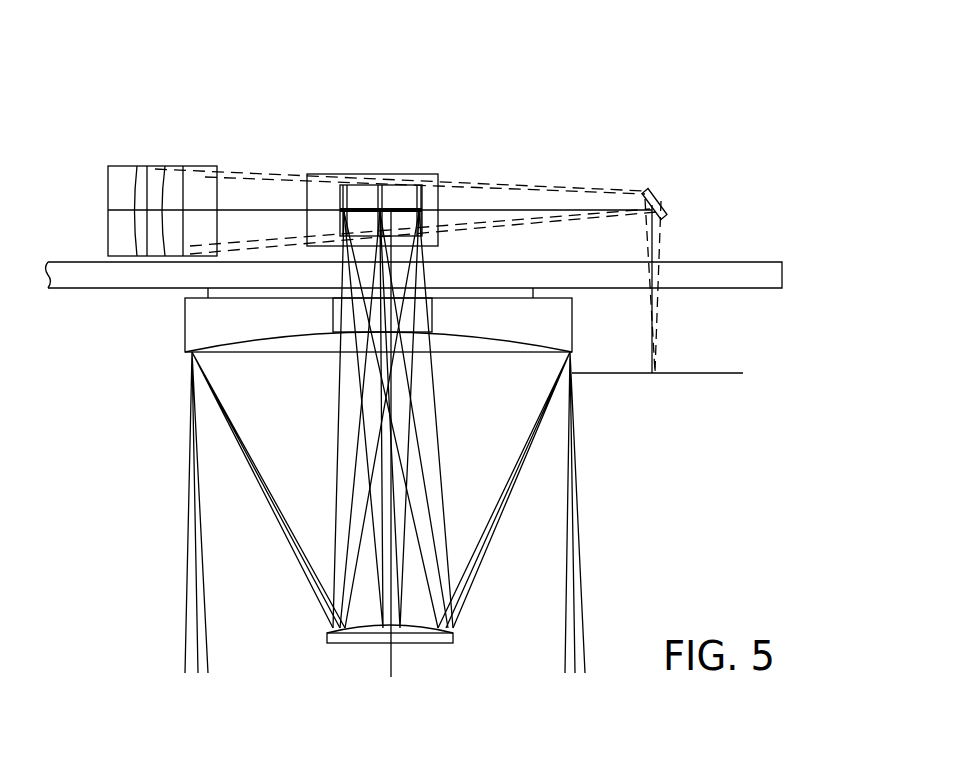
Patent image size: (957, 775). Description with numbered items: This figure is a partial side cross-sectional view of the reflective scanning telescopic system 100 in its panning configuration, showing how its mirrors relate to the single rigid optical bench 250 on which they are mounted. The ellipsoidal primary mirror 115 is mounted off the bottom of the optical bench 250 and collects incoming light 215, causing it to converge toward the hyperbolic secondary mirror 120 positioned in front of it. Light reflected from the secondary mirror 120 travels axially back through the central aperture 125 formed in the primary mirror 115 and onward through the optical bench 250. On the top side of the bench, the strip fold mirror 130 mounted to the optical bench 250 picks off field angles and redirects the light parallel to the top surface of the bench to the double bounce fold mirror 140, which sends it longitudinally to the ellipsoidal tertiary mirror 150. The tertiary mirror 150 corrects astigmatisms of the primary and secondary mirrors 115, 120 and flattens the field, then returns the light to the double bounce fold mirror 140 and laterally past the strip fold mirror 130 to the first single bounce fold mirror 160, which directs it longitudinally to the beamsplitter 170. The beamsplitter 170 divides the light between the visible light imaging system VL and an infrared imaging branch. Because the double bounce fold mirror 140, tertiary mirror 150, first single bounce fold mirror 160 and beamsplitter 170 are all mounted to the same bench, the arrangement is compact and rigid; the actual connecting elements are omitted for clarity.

The reflective scanning telescopic system 100 is at (132, 145).
The ellipsoidal tertiary mirror 150 is at (175, 166).
The strip fold mirror 130 is at (340, 209).
The first single bounce fold mirror 160 is at (399, 185).
The double bounce fold mirror 140 is at (438, 175).
The beamsplitter 170 is at (661, 203).
The optical bench 250 is at (773, 261).
The ellipsoidal primary mirror 115 is at (185, 328).
The central aperture 125 is at (421, 317).
The incoming light 215 is at (580, 531).
The hyperbolic secondary mirror 120 is at (455, 638).
The visible light imaging system VL is at (702, 329).